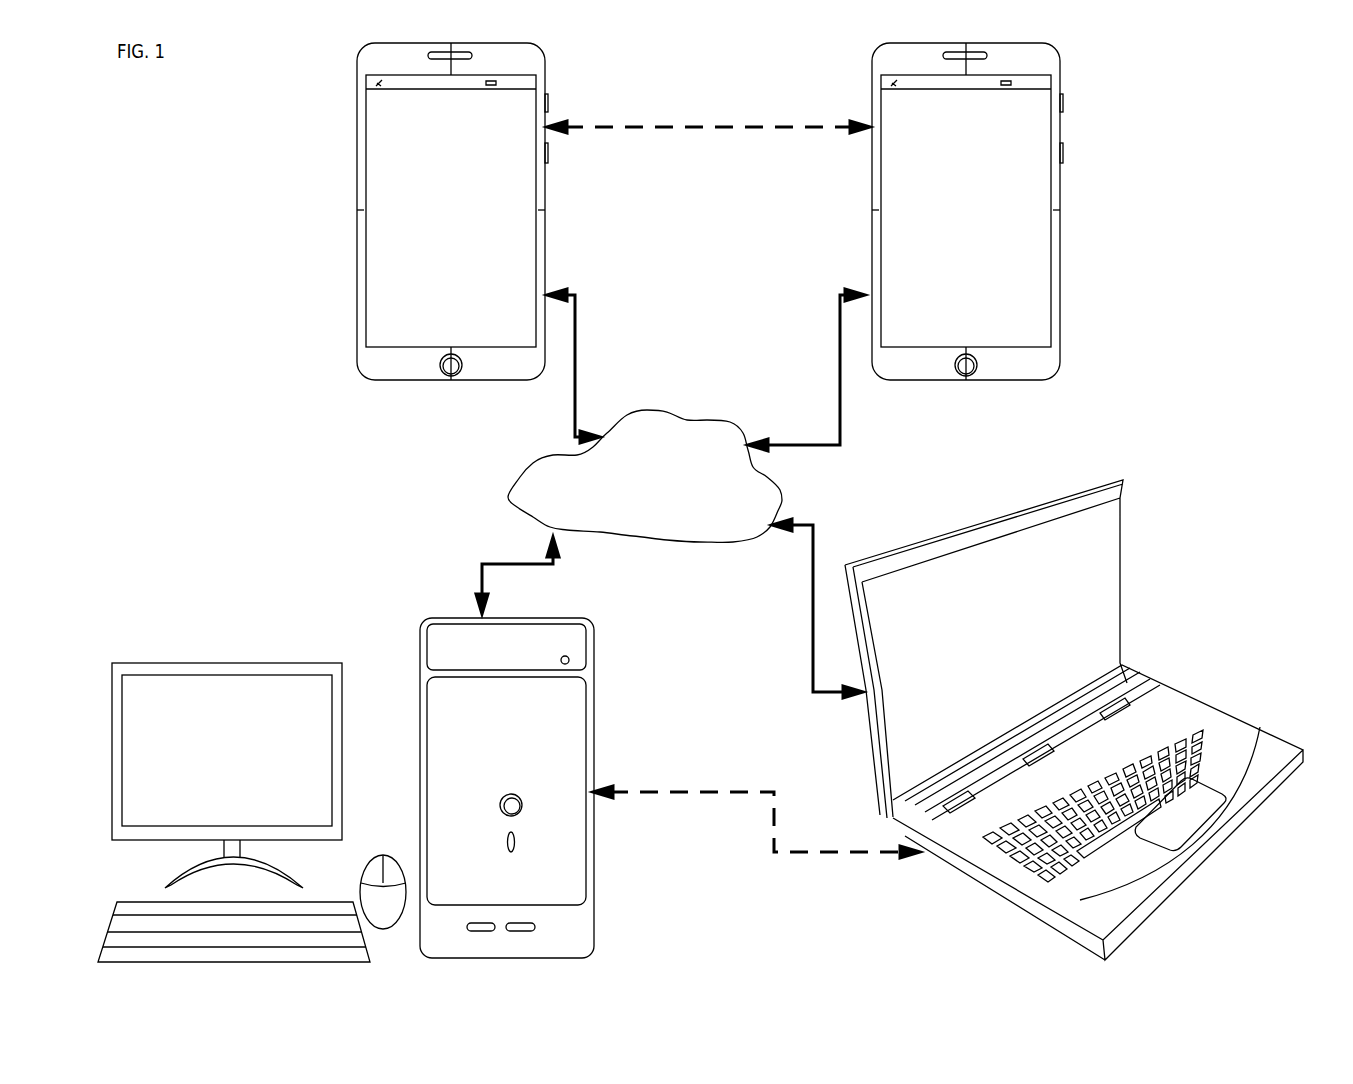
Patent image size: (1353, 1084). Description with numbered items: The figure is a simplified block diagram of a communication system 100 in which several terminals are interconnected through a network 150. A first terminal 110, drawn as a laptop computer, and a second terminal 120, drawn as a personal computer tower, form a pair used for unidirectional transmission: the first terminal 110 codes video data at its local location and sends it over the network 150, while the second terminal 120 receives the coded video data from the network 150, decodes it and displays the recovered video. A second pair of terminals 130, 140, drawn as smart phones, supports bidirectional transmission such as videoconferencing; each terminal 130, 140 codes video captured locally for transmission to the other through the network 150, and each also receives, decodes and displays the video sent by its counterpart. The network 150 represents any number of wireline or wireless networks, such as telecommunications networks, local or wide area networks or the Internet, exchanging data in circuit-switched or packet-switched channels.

The communication system 100 is at (700, 502).
The first terminal 110 is at (1125, 562).
The second terminal 120 is at (594, 912).
The terminal 130 is at (357, 150).
The terminal 140 is at (872, 150).
The network 150 is at (645, 476).